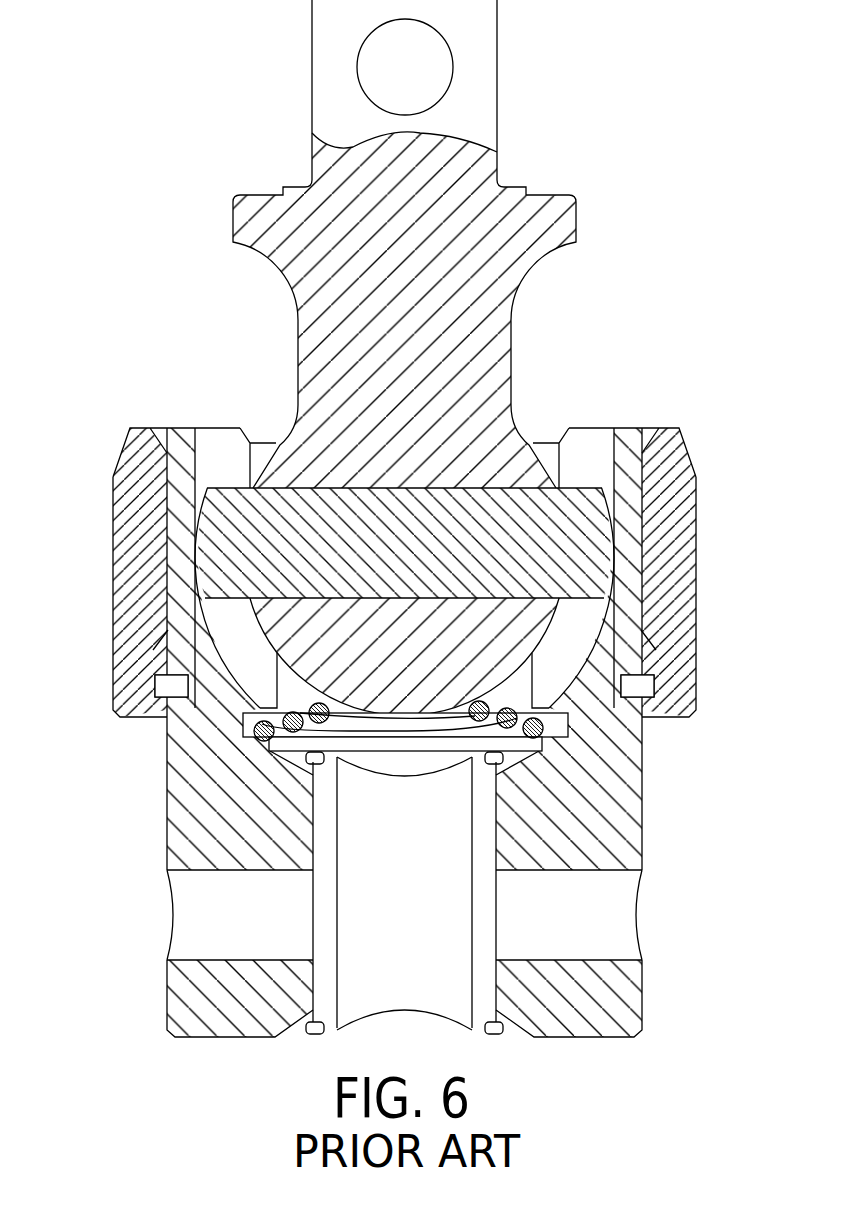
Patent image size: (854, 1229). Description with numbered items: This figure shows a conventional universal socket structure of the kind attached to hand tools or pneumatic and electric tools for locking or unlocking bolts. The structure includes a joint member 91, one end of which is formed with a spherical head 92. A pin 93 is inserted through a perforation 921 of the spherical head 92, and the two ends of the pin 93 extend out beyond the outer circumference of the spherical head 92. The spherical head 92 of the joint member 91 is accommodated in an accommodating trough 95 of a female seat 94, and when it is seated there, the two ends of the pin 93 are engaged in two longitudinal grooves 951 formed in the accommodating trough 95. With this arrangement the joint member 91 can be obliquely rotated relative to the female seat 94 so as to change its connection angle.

The joint member 91 is at (514, 360).
The spherical head 92 is at (530, 618).
The perforation 921 is at (413, 598).
The pin 93 is at (212, 543).
The female seat 94 is at (182, 792).
The accommodating trough 95 is at (260, 448).
The longitudinal grooves 951 is at (210, 458).